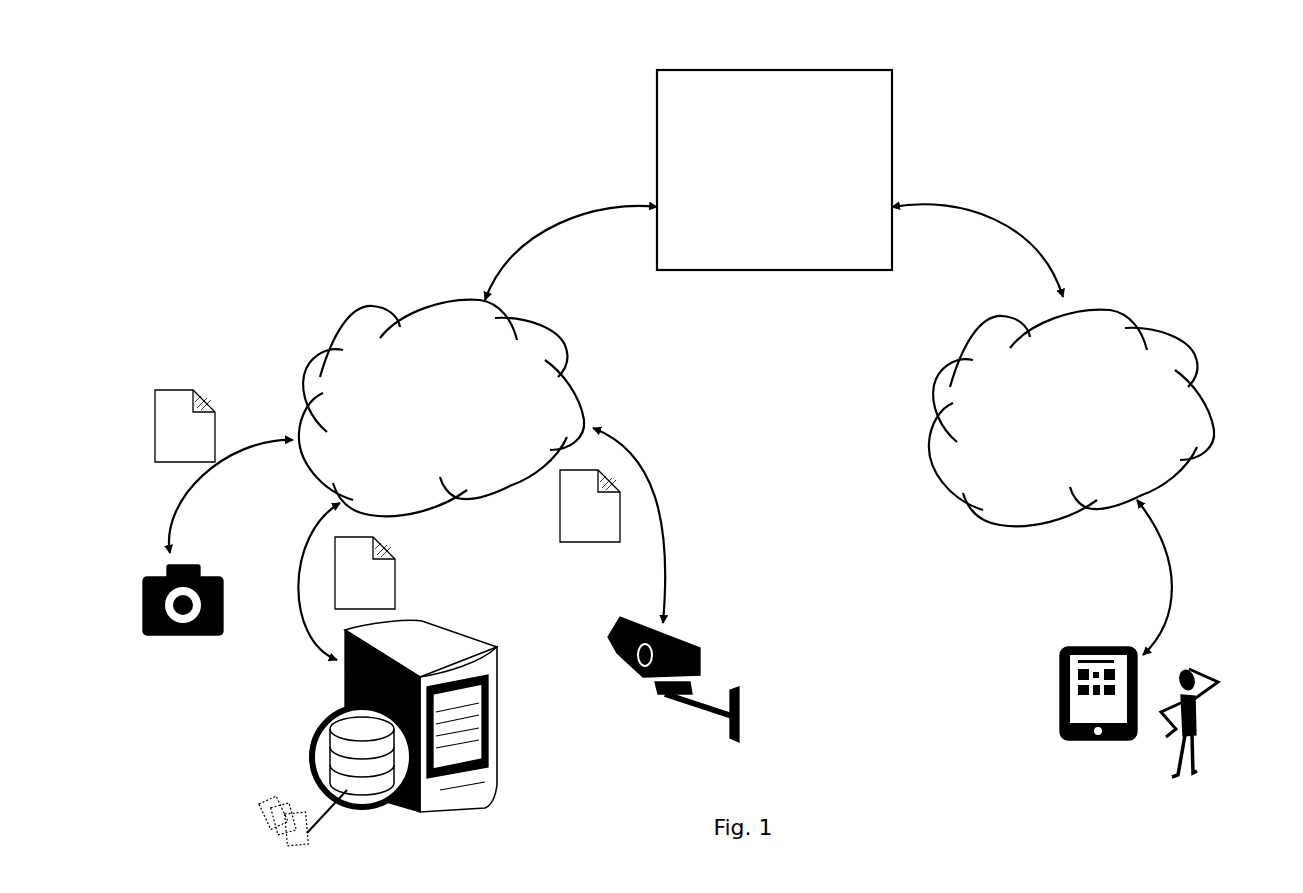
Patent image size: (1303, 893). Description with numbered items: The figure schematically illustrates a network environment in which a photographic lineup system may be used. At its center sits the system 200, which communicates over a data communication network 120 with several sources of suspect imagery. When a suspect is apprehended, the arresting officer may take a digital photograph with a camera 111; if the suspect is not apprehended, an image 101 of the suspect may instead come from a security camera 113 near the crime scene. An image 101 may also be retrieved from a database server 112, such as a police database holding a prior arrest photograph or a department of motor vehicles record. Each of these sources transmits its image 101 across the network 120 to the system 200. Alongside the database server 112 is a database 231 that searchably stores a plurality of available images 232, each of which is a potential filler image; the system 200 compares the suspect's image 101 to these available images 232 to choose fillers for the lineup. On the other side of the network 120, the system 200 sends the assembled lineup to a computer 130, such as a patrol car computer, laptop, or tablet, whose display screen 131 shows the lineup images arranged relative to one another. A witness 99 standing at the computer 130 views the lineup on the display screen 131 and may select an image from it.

The system 200 is at (752, 166).
The data communication network 120 is at (416, 410).
The image 101 is at (167, 443).
The camera 111 is at (183, 621).
The database server 112 is at (485, 632).
The security camera 113 is at (673, 692).
The database 231 is at (313, 778).
The available images 232 is at (273, 835).
The computer 130 is at (1073, 647).
The display screen 131 is at (1077, 715).
The witness 99 is at (1185, 663).